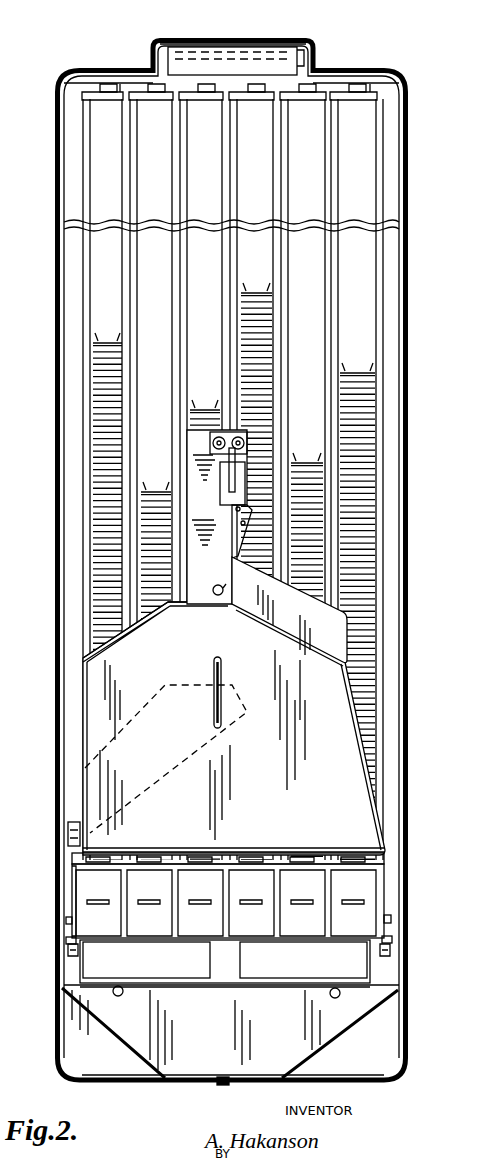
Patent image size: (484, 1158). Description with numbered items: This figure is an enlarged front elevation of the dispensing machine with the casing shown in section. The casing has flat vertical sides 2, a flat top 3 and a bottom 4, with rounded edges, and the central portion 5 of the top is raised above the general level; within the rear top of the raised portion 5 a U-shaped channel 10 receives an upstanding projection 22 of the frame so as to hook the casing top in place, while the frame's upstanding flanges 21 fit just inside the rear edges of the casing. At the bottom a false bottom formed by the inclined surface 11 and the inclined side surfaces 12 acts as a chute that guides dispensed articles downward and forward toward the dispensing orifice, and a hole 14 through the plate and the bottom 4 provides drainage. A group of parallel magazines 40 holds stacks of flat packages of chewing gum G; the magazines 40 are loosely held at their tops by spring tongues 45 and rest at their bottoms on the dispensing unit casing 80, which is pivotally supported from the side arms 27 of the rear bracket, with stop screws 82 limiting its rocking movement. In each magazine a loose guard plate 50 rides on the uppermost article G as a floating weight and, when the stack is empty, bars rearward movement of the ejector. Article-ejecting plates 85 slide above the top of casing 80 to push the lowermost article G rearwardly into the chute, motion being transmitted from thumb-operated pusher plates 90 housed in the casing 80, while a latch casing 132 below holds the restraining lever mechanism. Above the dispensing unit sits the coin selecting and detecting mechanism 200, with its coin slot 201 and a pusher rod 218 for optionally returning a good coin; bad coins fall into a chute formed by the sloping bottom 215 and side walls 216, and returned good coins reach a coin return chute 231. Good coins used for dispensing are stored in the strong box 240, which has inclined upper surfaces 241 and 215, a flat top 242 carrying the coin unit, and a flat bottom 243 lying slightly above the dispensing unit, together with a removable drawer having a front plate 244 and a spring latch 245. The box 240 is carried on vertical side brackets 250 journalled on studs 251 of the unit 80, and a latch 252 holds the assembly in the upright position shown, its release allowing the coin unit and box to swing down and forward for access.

The flat vertical sides 2 is at (58, 330).
The flat top 3 is at (352, 72).
The bottom 4 is at (145, 1085).
The raised central portion 5 is at (258, 45).
The U-shaped channel 10 is at (205, 65).
The inclined surface 11 is at (138, 1025).
The inclined side surfaces 12 is at (130, 1048).
The drainage hole 14 is at (228, 1078).
The upstanding flanges 21 is at (60, 301).
The upstanding projection 22 is at (310, 55).
The side arms 27 is at (66, 938).
The magazines 40 is at (158, 170).
The spring tongues 45 is at (122, 98).
The guard plate 50 is at (108, 342).
The packages of chewing gum G is at (113, 400).
The dispensing mechanism casing 80 is at (385, 888).
The stop screws 82 is at (68, 952).
The article-ejecting plates 85 is at (195, 860).
The pusher plate 90 is at (292, 922).
The latch lever casing 132 is at (185, 965).
The coin selecting and detecting mechanism 200 is at (187, 460).
The coin slot 201 is at (225, 478).
The sloping bottom 215 is at (307, 648).
The side walls 216 is at (290, 615).
The pusher rod 218 is at (221, 585).
The coin return chute 231 is at (74, 762).
The strong box 240 is at (360, 777).
The inclined upper surface 241 is at (107, 633).
The flat top 242 is at (188, 606).
The flat bottom 243 is at (278, 835).
The drawer front plate 244 is at (100, 700).
The spring latch 245 is at (214, 700).
The side brackets 250 is at (72, 877).
The studs 251 is at (66, 920).
The latch 252 is at (68, 832).